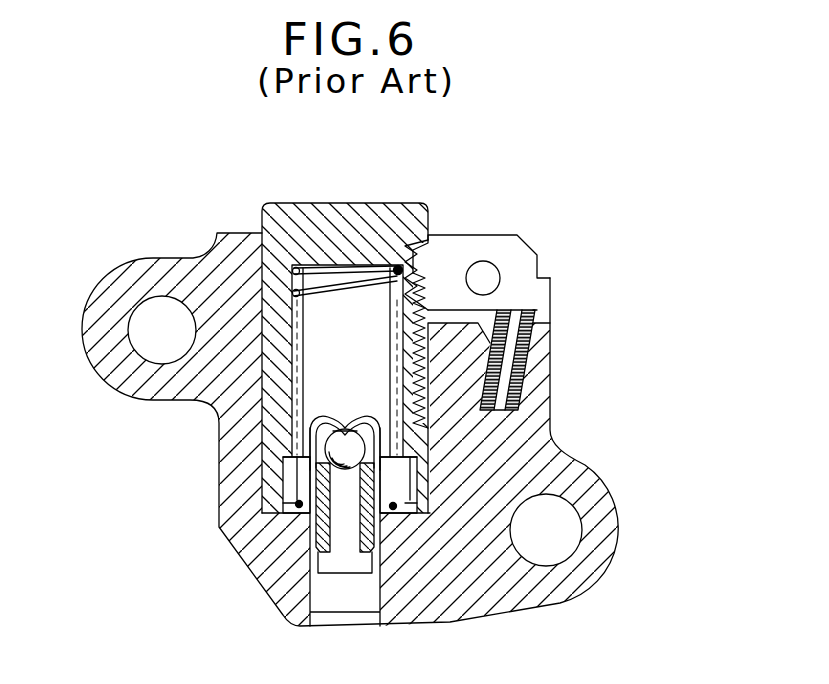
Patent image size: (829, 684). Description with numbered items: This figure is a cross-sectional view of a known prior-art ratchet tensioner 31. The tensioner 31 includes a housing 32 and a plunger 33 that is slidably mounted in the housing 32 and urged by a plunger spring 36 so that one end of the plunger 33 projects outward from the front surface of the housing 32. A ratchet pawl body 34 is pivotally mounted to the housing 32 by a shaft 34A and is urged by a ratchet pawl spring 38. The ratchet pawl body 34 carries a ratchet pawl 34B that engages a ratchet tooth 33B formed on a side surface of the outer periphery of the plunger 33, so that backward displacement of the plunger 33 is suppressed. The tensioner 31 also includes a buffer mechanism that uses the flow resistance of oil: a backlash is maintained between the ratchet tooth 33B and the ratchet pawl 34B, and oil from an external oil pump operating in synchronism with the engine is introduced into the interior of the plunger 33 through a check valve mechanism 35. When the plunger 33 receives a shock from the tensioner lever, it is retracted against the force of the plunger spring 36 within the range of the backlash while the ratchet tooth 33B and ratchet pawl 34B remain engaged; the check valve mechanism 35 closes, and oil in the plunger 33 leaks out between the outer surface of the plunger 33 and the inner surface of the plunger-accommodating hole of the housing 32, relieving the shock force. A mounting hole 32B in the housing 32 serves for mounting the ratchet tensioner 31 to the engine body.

The ratchet tensioner 31 is at (226, 213).
The housing 32 is at (530, 476).
The mounting hole 32B is at (560, 535).
The plunger 33 is at (339, 222).
The ratchet tooth 33B is at (548, 422).
The ratchet pawl body 34 is at (480, 248).
The shaft 34A is at (483, 278).
The ratchet pawl 34B is at (452, 235).
The check valve mechanism 35 is at (348, 406).
The plunger spring 36 is at (318, 397).
The ratchet pawl spring 38 is at (525, 392).